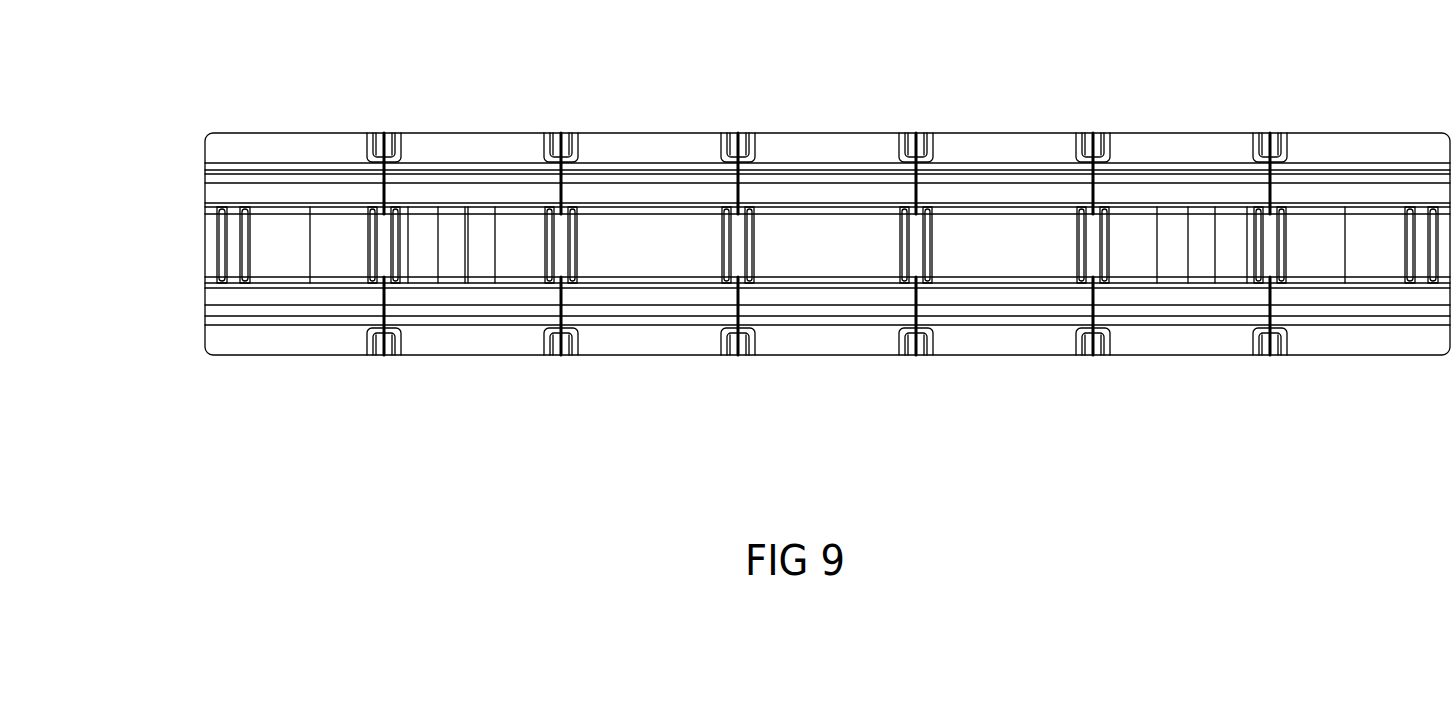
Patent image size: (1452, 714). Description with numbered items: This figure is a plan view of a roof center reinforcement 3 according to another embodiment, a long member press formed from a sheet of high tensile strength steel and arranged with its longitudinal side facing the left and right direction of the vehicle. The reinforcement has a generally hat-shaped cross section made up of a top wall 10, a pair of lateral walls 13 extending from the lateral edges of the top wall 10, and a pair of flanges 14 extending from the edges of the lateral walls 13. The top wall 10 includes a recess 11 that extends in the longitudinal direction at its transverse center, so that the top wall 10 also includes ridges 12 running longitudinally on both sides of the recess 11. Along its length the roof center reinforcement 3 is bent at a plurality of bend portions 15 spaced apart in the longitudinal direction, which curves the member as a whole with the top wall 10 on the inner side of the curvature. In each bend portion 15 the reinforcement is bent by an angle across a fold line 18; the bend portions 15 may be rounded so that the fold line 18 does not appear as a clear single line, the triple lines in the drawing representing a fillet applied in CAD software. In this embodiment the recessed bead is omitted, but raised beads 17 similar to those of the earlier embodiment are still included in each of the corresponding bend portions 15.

The roof center reinforcement 3 is at (627, 104).
The top wall 10 is at (784, 245).
The recess 11 is at (212, 245).
The ridges 12 is at (222, 193).
The lateral walls 13 is at (222, 173).
The flanges 14 is at (219, 152).
The bend portions 15 is at (814, 299).
The raised beads 17 is at (240, 238).
The fold line 18 is at (385, 292).